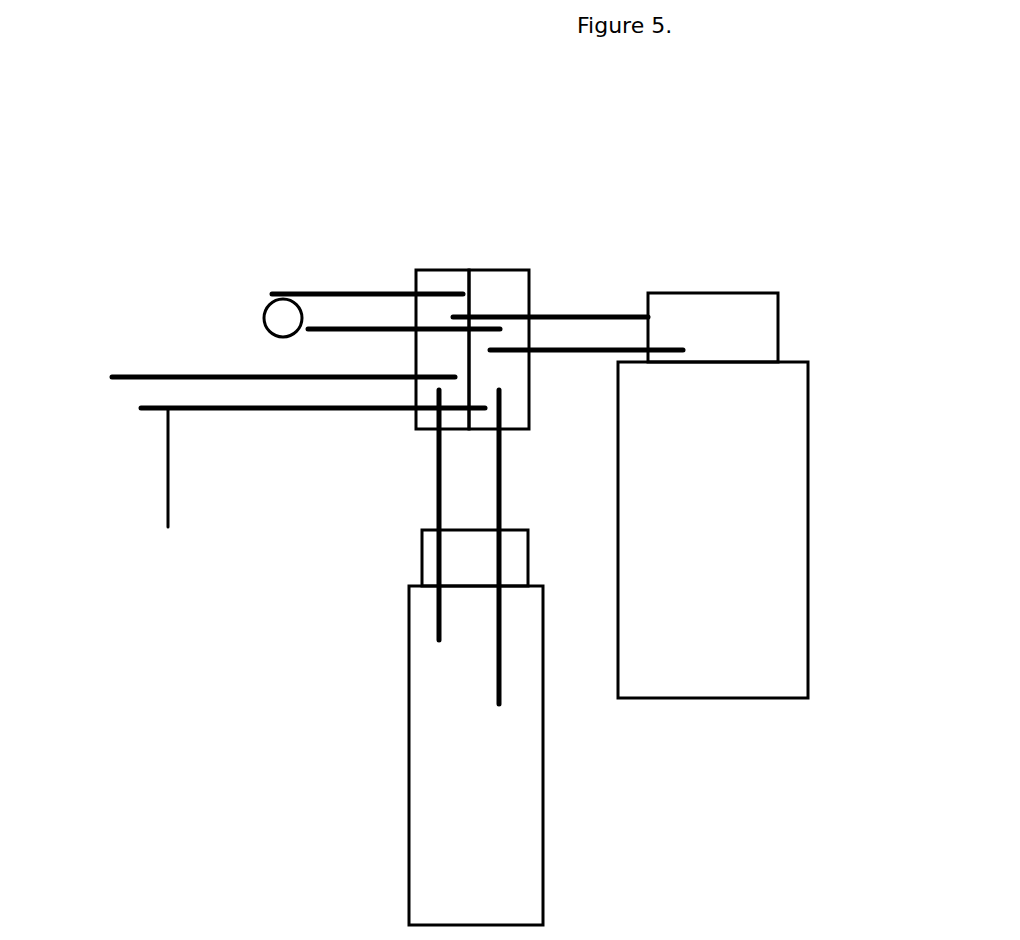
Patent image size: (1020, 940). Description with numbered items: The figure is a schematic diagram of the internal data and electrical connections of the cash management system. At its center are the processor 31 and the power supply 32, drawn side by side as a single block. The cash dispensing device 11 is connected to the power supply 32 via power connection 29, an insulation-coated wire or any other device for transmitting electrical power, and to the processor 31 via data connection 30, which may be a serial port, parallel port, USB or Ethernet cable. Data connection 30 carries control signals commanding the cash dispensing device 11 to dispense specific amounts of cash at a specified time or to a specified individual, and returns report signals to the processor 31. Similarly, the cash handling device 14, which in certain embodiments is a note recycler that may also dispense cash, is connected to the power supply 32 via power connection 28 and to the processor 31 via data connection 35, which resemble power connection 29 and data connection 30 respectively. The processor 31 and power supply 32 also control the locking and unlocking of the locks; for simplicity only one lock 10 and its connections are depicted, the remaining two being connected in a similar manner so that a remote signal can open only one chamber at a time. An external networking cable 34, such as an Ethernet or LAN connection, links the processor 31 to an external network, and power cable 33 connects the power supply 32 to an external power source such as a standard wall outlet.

The lock 10 is at (267, 300).
The cash dispensing device 11 is at (695, 428).
The cash handling device 14 is at (409, 757).
The power connection 28 is at (432, 503).
The power connection 29 is at (607, 313).
The data connection 30 is at (565, 352).
The processor 31 is at (497, 266).
The power supply 32 is at (435, 278).
The power cable 33 is at (148, 377).
The external networking cable 34 is at (307, 477).
The data connection 35 is at (493, 482).